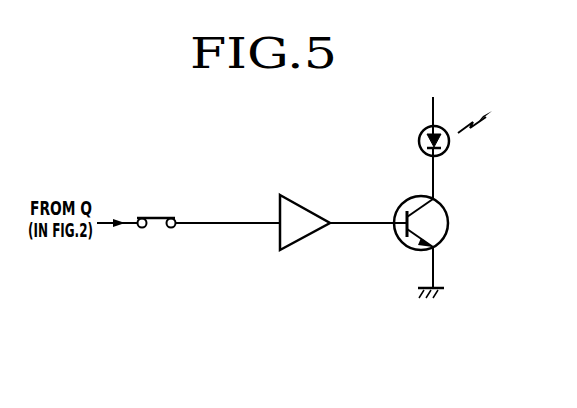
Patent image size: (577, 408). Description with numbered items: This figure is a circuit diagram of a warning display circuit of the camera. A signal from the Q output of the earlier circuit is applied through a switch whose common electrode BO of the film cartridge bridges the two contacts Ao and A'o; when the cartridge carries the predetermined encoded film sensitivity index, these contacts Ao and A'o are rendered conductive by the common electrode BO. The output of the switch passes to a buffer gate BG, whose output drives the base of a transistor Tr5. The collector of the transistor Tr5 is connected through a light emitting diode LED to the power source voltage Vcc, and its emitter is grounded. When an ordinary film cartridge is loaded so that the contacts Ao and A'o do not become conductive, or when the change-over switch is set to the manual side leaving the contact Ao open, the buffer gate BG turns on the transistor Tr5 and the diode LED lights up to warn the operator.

The common electrode BO is at (152, 215).
The contact Ao is at (141, 228).
The contact A'o is at (189, 252).
The buffer gate BG is at (302, 207).
The transistor Tr5 is at (417, 205).
The light emitting diode LED is at (446, 152).
The power source voltage Vcc is at (434, 98).